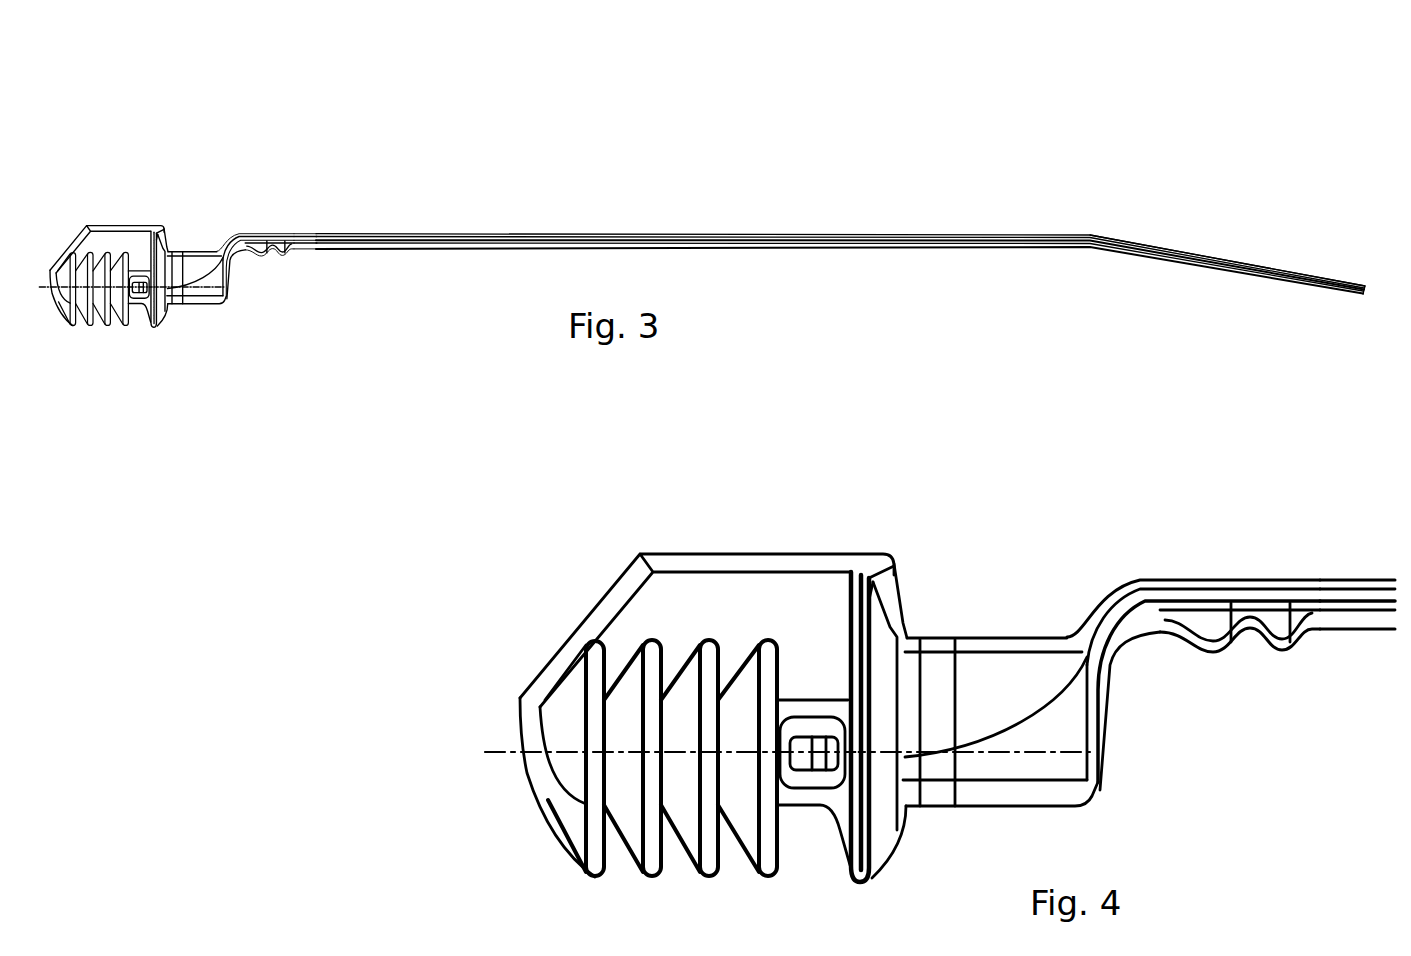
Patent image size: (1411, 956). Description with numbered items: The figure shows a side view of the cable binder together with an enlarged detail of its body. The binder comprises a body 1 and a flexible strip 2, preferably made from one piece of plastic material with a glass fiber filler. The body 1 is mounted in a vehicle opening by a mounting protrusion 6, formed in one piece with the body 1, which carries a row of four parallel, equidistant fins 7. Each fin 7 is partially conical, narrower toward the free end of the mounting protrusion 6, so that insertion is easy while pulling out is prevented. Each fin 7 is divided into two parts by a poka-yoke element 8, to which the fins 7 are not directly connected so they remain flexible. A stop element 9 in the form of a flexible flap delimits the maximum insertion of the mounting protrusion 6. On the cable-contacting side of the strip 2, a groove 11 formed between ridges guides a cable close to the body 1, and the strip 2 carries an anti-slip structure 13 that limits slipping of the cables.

In FIG. 3, the body 1 is at (208, 305).
In FIG. 4, the body 1 is at (991, 677).
In FIG. 3, the flexible strip 2 is at (1052, 250).
In FIG. 4, the flexible strip 2 is at (1375, 632).
In FIG. 3, the mounting protrusion 6 is at (58, 188).
In FIG. 4, the mounting protrusion 6 is at (470, 580).
In FIG. 3, the fins 7 is at (72, 320).
In FIG. 4, the fins 7 is at (568, 822).
In FIG. 3, the poka-yoke element 8 is at (123, 220).
In FIG. 4, the poka-yoke element 8 is at (723, 600).
In FIG. 3, the stop element 9 is at (172, 222).
In FIG. 4, the stop element 9 is at (840, 642).
In FIG. 3, the groove 11 is at (278, 300).
In FIG. 4, the groove 11 is at (1253, 635).
In FIG. 3, the anti-slip structure 13 is at (935, 265).